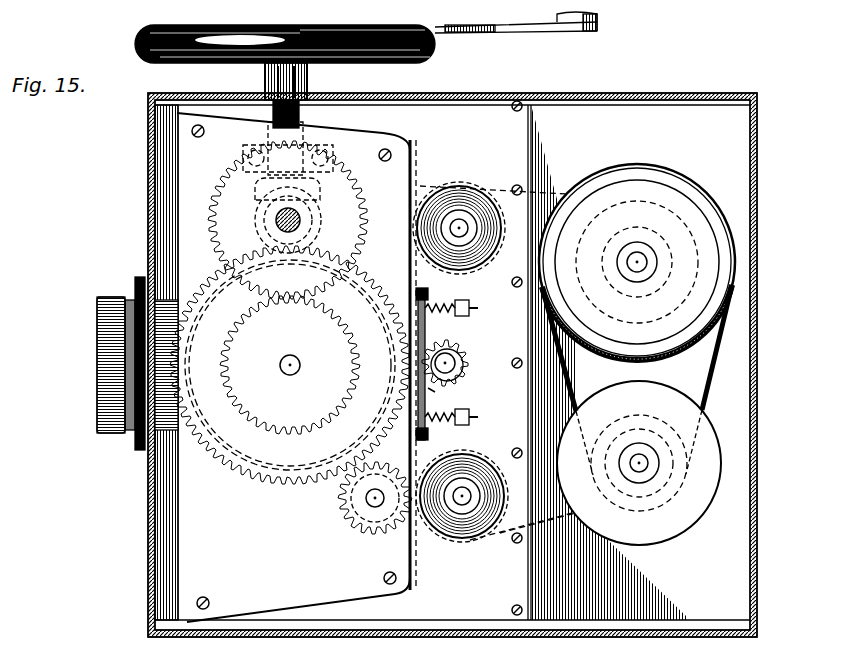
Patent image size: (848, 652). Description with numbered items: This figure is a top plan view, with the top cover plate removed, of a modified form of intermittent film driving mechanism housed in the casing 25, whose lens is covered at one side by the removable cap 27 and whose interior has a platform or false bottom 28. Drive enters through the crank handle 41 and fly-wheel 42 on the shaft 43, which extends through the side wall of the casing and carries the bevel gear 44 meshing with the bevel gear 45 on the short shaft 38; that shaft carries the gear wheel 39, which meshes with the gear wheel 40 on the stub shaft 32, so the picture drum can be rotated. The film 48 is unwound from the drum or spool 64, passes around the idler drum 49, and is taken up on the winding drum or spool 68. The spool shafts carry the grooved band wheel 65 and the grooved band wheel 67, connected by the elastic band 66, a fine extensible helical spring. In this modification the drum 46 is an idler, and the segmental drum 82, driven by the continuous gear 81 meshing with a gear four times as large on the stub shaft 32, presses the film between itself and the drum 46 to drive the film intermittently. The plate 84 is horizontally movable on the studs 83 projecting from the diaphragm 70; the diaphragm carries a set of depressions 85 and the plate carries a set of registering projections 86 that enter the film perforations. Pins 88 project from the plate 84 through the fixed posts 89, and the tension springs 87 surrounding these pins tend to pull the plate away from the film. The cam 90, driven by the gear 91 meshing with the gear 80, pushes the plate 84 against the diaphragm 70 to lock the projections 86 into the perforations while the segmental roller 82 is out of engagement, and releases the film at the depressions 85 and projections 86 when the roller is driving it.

The casing 25 is at (757, 438).
The removable cap 27 is at (97, 352).
The platform or false bottom 28 is at (496, 362).
The stub shaft 32 is at (287, 357).
The short shaft 38 is at (280, 217).
The gear wheel 39 is at (384, 182).
The gear wheel 40 is at (275, 430).
The crank handle 41 is at (592, 27).
The fly-wheel 42 is at (436, 38).
The shaft 43 is at (308, 78).
The bevel gear 44 is at (216, 186).
The bevel gear 45 is at (262, 232).
The drum 46 is at (478, 540).
The film 48 is at (562, 522).
The idler drum 49 is at (463, 200).
The unwinding drum or spool 64 is at (672, 212).
The grooved band wheel 65 is at (620, 164).
The elastic band 66 is at (713, 370).
The grooved band wheel 67 is at (698, 514).
The winding drum or spool 68 is at (688, 458).
The diaphragm 70 is at (412, 553).
The gear 80 is at (233, 482).
The continuous gear 81 is at (353, 522).
The segmental drum 82 is at (395, 524).
The studs 83 is at (430, 297).
The plate 84 is at (428, 436).
The depressions 85 is at (395, 328).
The projections 86 is at (452, 315).
The tension springs 87 is at (450, 428).
The pins 88 is at (472, 417).
The fixed posts 89 is at (470, 304).
The cam 90 is at (466, 352).
The gear 91 is at (456, 390).